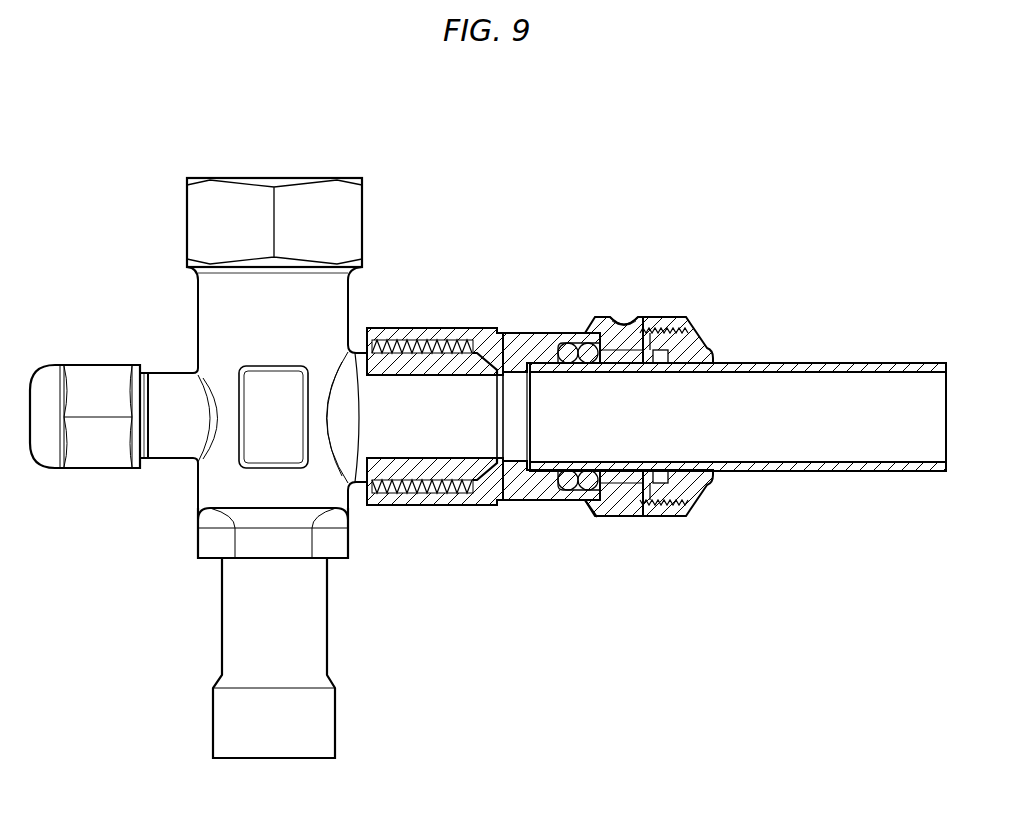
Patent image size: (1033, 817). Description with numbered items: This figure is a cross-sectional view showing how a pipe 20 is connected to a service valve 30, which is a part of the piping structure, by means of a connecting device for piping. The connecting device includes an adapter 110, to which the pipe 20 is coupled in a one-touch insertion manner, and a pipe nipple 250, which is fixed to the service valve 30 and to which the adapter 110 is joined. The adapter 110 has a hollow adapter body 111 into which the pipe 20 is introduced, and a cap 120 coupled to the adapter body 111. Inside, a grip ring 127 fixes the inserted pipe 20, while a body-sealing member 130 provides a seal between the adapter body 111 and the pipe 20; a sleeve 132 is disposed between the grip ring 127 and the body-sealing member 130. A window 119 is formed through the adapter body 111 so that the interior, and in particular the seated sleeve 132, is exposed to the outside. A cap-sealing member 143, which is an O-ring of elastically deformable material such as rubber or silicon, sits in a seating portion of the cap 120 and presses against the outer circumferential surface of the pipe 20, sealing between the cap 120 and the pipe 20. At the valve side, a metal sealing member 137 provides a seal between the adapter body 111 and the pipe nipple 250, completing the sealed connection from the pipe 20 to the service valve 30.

The service valve 30 is at (327, 138).
The pipe 20 is at (853, 362).
The adapter 110 is at (593, 290).
The adapter body 111 is at (517, 502).
The window 119 is at (623, 322).
The cap 120 is at (713, 329).
The grip ring 127 is at (630, 487).
The body-sealing member 130 is at (600, 336).
The sleeve 132 is at (607, 513).
The metal sealing member 137 is at (491, 351).
The cap-sealing member 143 is at (657, 352).
The pipe nipple 250 is at (423, 501).